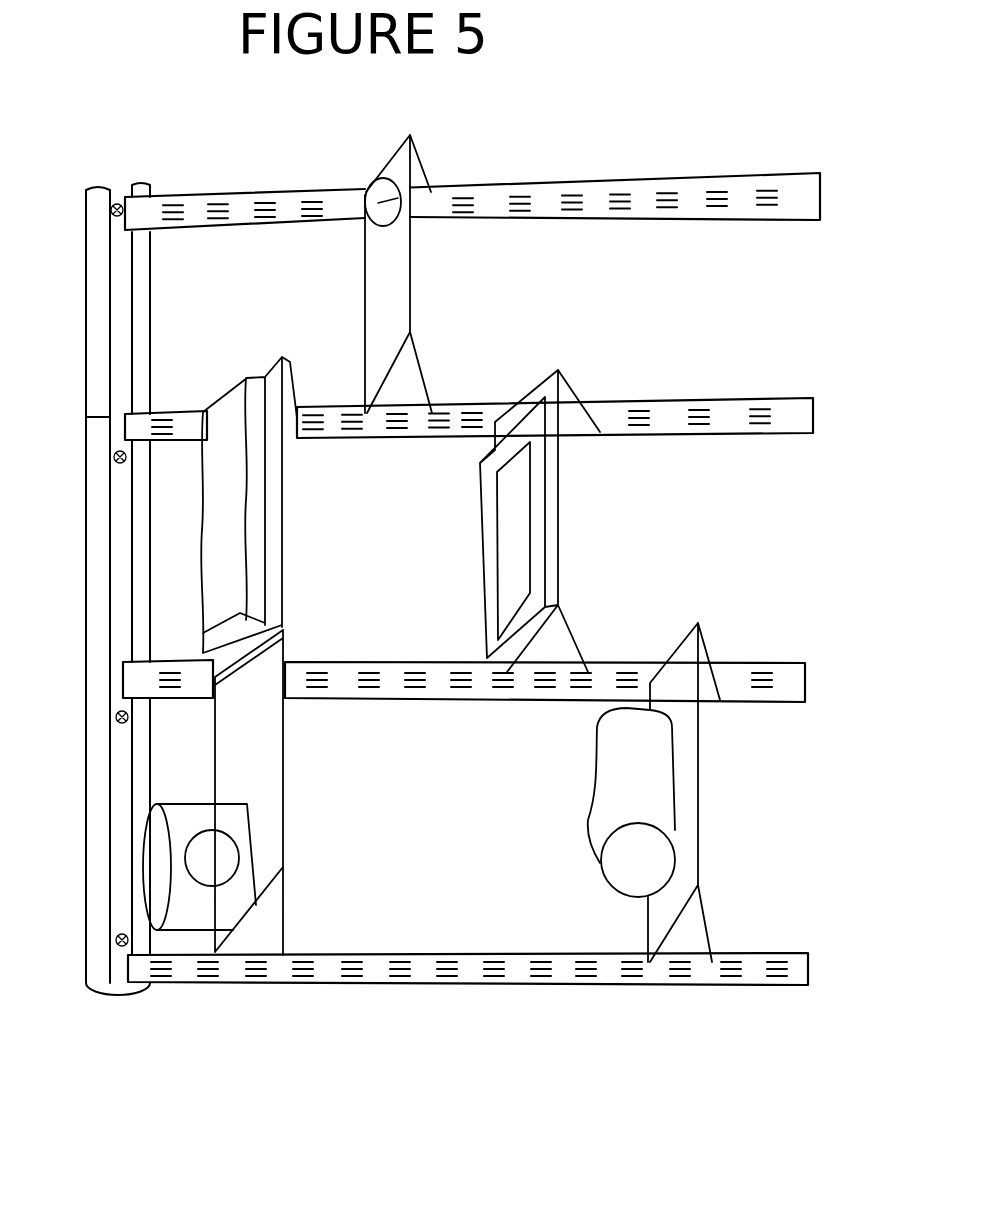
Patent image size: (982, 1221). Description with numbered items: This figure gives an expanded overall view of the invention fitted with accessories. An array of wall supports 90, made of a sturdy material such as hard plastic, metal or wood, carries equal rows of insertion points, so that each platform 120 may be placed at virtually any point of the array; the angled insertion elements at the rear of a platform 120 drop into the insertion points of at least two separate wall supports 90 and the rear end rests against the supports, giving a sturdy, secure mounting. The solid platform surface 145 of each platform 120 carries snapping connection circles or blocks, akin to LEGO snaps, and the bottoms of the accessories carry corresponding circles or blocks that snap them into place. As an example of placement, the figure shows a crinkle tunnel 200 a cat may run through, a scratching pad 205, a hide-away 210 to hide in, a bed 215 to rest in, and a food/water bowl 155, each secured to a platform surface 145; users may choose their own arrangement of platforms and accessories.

The wall support 90 is at (670, 415).
The platform 120 is at (267, 937).
The platform surface 145 is at (385, 326).
The food/water bowl 155 is at (398, 201).
The crinkle tunnel 200 is at (640, 800).
The scratching pad 205 is at (515, 548).
The hide-away 210 is at (247, 847).
The bed 215 is at (225, 533).